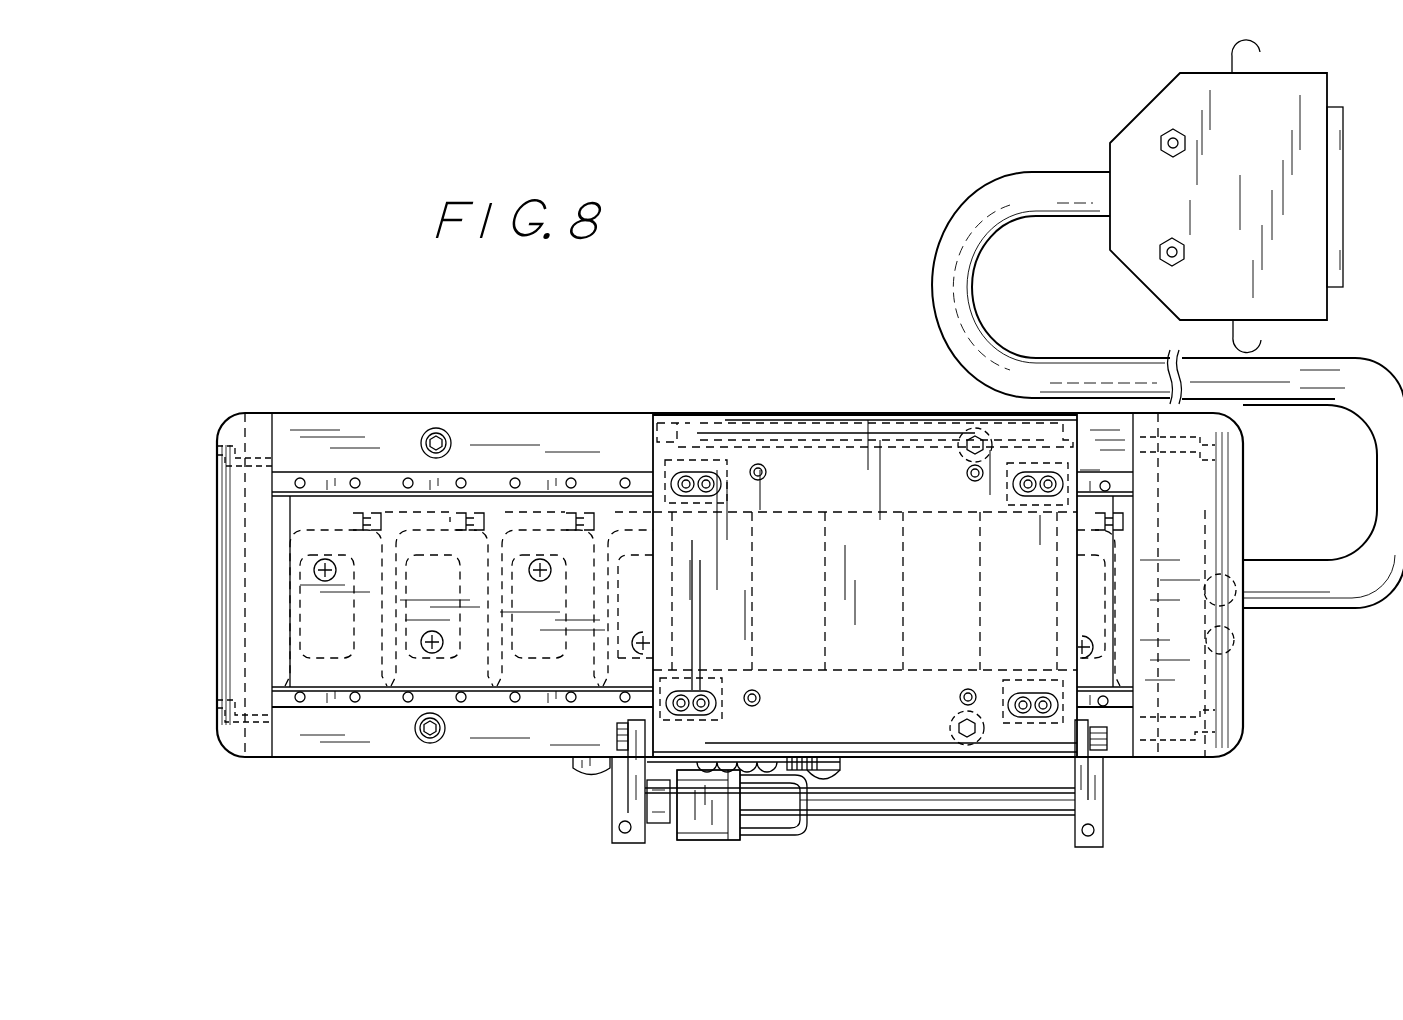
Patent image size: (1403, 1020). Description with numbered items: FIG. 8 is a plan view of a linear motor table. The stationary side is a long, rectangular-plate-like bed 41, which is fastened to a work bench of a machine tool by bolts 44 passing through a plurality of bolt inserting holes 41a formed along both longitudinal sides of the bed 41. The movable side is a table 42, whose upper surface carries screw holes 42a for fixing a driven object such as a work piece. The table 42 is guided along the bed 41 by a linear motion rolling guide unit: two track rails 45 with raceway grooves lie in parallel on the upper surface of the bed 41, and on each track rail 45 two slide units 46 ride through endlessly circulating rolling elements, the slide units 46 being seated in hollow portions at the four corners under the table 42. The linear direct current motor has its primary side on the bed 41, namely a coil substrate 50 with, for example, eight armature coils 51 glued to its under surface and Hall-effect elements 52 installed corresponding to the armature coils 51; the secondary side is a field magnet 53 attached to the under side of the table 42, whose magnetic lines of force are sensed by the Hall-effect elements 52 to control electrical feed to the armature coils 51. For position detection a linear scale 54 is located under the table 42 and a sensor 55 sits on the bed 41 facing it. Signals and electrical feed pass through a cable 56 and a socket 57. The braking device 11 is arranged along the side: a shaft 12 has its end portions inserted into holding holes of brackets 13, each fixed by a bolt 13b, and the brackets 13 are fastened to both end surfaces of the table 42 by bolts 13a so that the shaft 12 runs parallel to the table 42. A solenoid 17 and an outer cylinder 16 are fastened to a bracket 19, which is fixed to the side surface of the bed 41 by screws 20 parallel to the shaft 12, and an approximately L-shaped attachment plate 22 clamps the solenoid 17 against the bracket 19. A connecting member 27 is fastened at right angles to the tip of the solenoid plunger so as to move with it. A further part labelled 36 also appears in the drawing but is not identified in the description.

The braking device 11 is at (788, 852).
The shaft 12 is at (927, 812).
The bracket 13 is at (634, 845).
The bolts 13a is at (616, 732).
The bolt 13b is at (631, 829).
The outer cylinder 16 is at (798, 837).
The solenoid 17 is at (802, 824).
The bracket 19 is at (570, 760).
The screws 20 is at (830, 772).
The attachment plate 22 is at (693, 842).
The connecting member 27 is at (658, 800).
The guide posts 36 is at (707, 667).
The bed 41 is at (334, 413).
The bolt inserting holes 41a is at (426, 432).
The table 42 is at (838, 414).
The screw holes 42a is at (763, 481).
The bolts 44 is at (446, 430).
The track rails 45 is at (275, 485).
The slide units 46 is at (663, 413).
The coil substrate 50 is at (1100, 547).
The armature coils 51 is at (375, 668).
The Hall-effect elements 52 is at (355, 513).
The field magnet 53 is at (857, 672).
The linear scale 54 is at (790, 413).
The sensor 55 is at (725, 413).
The cable 56 is at (958, 225).
The socket 57 is at (1126, 119).